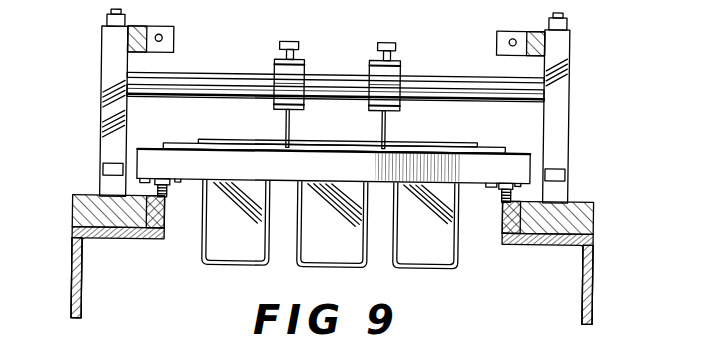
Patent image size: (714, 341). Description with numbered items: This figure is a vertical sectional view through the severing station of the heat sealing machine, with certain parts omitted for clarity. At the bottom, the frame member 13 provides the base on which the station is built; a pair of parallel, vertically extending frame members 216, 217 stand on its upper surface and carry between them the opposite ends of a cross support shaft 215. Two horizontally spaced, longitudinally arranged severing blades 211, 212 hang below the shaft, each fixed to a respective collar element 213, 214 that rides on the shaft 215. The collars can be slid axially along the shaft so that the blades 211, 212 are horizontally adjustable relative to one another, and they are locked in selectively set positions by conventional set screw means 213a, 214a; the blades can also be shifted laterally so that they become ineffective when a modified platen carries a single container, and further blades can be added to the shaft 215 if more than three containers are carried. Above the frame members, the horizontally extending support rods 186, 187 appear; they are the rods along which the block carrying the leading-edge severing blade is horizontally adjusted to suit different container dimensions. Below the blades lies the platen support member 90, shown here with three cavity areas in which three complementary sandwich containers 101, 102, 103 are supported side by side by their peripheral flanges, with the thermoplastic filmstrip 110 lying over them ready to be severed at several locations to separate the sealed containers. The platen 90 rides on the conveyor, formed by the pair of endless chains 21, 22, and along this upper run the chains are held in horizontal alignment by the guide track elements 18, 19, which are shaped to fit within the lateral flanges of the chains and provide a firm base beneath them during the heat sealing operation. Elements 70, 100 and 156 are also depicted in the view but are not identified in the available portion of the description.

The frame member 13 is at (84, 264).
The guide track element 18 is at (129, 226).
The guide track element 19 is at (503, 229).
The endless chain 21 is at (500, 200).
The endless chain 22 is at (170, 197).
The platform 70 is at (537, 158).
The platen support member 90 is at (498, 146).
The top plate 100 is at (449, 145).
The sandwich container 101 is at (446, 253).
The sandwich container 102 is at (349, 253).
The sandwich container 103 is at (249, 253).
The thermoplastic filmstrip 110 is at (410, 149).
The numeral of adjacent figure 156 is at (484, 339).
The support rod 186 is at (510, 37).
The support rod 187 is at (160, 35).
The severing blade 211 is at (285, 131).
The severing blade 212 is at (380, 136).
The collar element 213 is at (282, 75).
The set screw means 213a is at (293, 44).
The collar element 214 is at (376, 76).
The set screw means 214a is at (393, 44).
The cross support shaft 215 is at (457, 83).
The frame member 216 is at (106, 78).
The frame member 217 is at (563, 63).